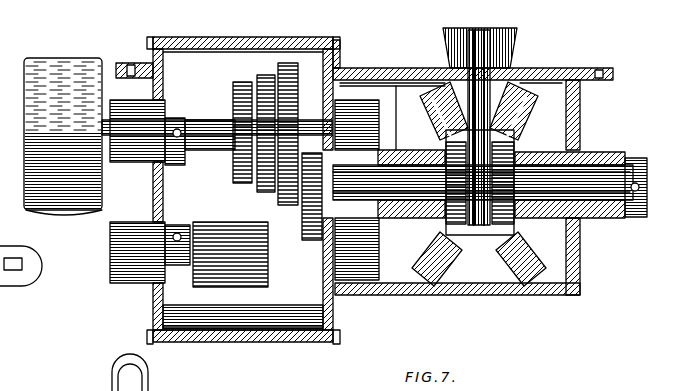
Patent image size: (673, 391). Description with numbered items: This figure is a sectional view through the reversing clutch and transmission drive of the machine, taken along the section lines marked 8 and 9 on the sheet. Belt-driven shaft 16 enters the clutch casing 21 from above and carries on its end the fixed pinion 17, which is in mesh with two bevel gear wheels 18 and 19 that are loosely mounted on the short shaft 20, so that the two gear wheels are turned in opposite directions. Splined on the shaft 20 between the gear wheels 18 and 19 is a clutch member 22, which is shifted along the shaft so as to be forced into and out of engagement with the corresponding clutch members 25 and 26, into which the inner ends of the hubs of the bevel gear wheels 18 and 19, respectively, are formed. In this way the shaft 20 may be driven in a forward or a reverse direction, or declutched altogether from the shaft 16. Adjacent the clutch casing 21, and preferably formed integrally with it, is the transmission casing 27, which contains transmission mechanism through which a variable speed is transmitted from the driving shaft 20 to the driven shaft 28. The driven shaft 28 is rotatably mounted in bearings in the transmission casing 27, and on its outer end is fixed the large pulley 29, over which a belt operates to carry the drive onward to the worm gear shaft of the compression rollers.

The section line 8- 8 is at (60, 302).
The section line 9- 9 is at (190, 370).
The shaft 16 is at (466, 52).
The fixed pinion 17 is at (448, 90).
The bevel gear wheel 18 is at (424, 125).
The bevel gear wheel 19 is at (528, 122).
The short shaft 20 is at (584, 214).
The clutch casing 21 is at (366, 70).
The clutch member 22 is at (516, 222).
The clutch member 25 is at (452, 148).
The clutch member 26 is at (509, 138).
The transmission casing 27 is at (284, 341).
The driven shaft 28 is at (200, 128).
The pulley 29 is at (52, 66).